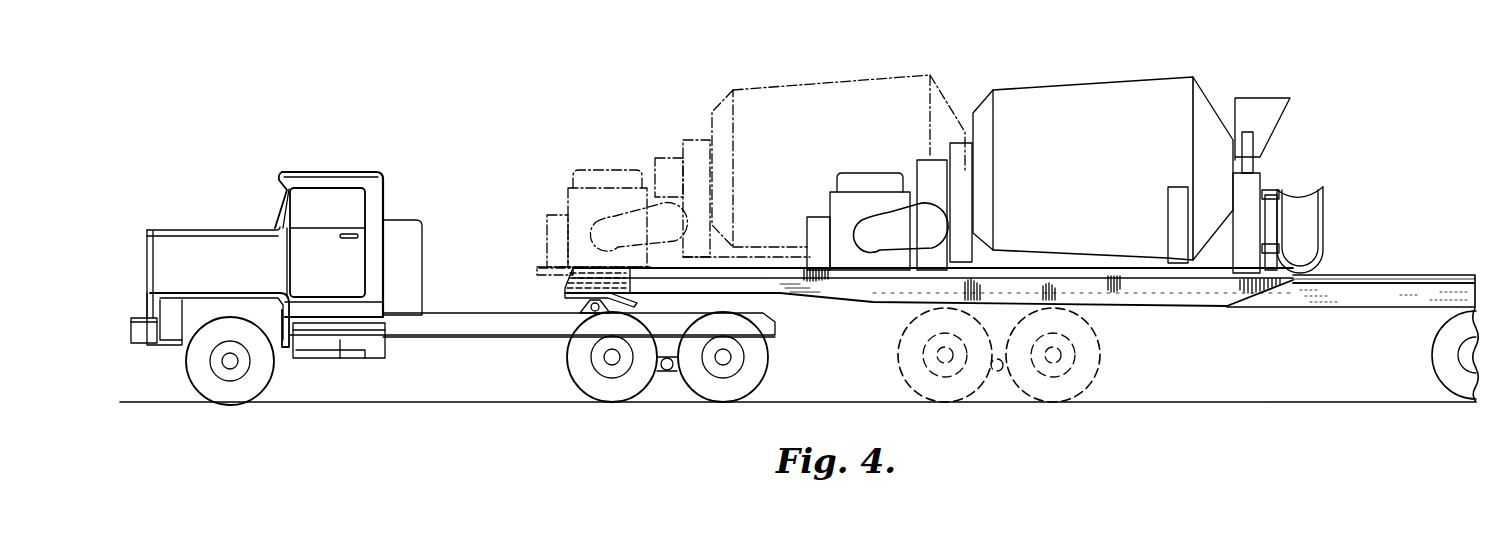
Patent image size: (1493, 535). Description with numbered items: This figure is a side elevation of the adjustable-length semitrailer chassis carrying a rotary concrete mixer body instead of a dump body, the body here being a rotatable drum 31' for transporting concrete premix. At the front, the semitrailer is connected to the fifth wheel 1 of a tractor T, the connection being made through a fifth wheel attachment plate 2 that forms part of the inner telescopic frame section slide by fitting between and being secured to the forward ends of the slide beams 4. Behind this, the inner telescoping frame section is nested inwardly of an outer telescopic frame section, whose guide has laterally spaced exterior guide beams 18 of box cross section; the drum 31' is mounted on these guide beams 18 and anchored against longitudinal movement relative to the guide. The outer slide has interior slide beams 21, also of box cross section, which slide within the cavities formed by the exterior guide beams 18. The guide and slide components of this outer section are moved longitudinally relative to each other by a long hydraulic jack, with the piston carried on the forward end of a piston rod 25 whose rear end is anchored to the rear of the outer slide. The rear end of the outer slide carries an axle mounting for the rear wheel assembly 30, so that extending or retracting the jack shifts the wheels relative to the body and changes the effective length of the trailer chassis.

The tractor T is at (477, 323).
The fifth wheel 1 is at (577, 297).
The fifth wheel attachment plate 2 is at (566, 276).
The slide beams 4 is at (783, 288).
The exterior guide beams 18 is at (1173, 292).
The interior slide beams 21 is at (1382, 295).
The piston rod 25 is at (1358, 275).
The rear wheel assembly 30 is at (1455, 380).
The rotatable drum 31' is at (1103, 150).